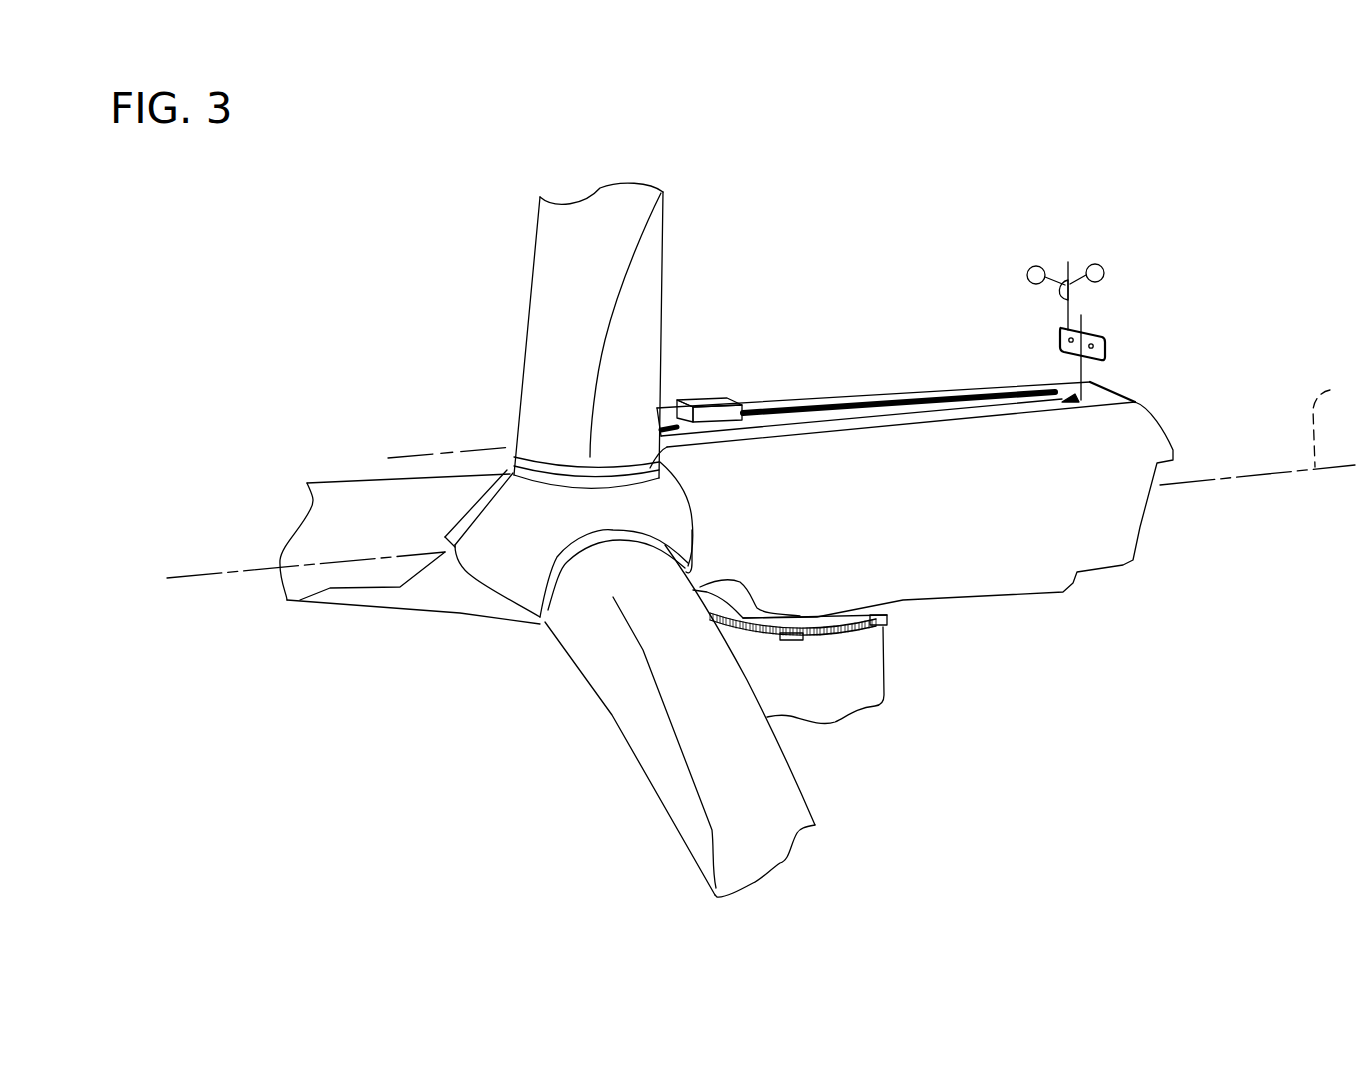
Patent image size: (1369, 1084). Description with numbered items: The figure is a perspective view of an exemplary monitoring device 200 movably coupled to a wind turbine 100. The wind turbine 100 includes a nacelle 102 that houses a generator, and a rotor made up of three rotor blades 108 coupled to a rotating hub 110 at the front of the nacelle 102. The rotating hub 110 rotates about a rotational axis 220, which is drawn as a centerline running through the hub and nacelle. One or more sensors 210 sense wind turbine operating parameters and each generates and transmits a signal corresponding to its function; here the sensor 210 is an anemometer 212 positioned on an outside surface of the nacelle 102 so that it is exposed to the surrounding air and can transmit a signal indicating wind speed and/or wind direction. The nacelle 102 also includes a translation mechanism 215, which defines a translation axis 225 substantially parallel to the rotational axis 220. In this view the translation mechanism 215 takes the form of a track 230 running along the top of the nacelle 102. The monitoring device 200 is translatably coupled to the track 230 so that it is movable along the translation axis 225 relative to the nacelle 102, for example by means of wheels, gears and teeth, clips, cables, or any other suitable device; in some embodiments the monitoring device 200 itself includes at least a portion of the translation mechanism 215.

The wind turbine 100 is at (443, 722).
The nacelle 102 is at (1142, 528).
The rotor blade 108 is at (665, 228).
The rotating hub 110 is at (532, 623).
The monitoring device 200 is at (712, 402).
The sensor 210 is at (1089, 290).
The anemometer 212 is at (1047, 258).
The translation mechanism 215 is at (877, 400).
The rotational axis 220 is at (185, 575).
The translation axis 225 is at (390, 458).
The track 230 is at (981, 392).